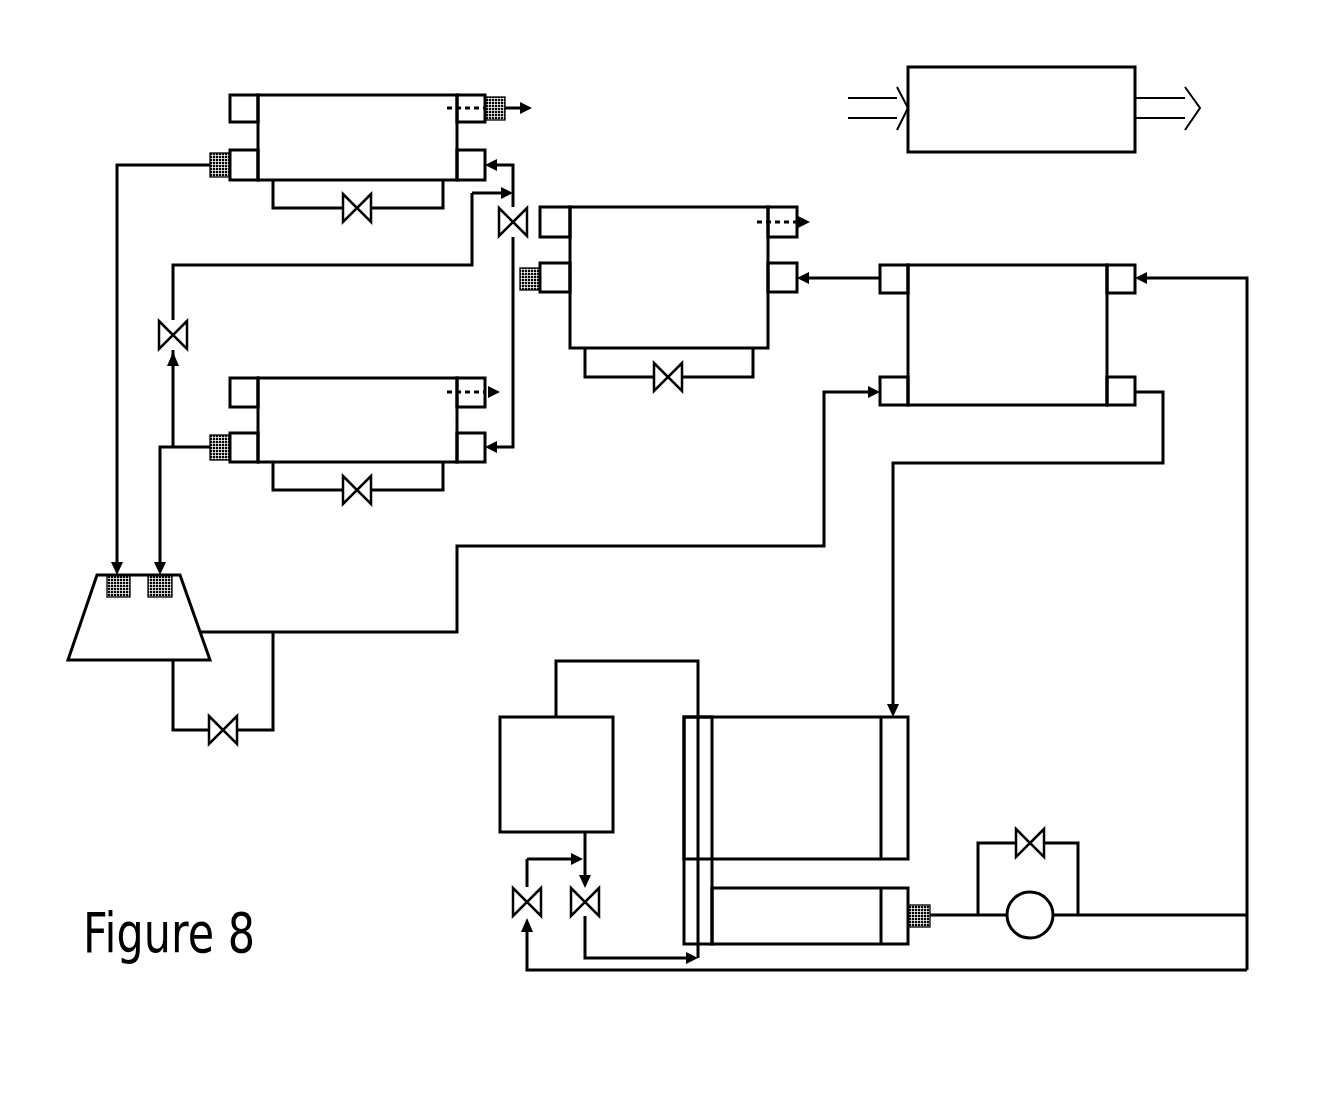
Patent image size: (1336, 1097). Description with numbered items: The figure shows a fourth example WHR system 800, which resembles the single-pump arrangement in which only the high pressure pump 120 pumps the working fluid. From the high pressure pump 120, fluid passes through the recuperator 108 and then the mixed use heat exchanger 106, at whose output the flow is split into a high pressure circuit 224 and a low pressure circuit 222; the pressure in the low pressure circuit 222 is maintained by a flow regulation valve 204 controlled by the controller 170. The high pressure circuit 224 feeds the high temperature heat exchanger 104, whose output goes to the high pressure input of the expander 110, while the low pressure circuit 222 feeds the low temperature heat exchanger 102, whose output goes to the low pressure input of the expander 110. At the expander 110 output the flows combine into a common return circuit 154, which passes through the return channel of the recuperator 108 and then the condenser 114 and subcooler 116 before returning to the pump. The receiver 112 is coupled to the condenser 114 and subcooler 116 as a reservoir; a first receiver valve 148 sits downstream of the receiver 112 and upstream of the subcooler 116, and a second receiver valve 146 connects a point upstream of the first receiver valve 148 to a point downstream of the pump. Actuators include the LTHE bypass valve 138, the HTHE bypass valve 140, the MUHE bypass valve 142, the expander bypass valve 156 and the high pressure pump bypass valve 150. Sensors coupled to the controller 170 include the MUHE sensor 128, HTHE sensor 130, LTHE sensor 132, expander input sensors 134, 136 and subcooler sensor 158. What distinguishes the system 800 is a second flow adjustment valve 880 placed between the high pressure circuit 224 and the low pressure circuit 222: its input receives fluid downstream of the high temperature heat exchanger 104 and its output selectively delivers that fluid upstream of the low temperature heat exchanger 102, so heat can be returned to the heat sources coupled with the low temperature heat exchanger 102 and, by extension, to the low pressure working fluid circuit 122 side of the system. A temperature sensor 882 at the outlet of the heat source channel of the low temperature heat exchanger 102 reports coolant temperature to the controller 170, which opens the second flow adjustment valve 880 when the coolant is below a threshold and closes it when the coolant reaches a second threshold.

The low temperature heat exchanger 102 is at (357, 137).
The high temperature heat exchanger 104 is at (365, 420).
The mixed use heat exchanger 106 is at (675, 277).
The recuperator 108 is at (980, 491).
The expander 110 is at (139, 617).
The receiver 112 is at (599, 809).
The condenser 114 is at (796, 830).
The subcooler 116 is at (810, 916).
The high pressure pump 120 is at (1042, 933).
The low pressure working fluid circuit 122 is at (1250, 505).
The MUHE sensor 128 is at (530, 292).
The HTHE sensor 130 is at (214, 435).
The LTHE sensor 132 is at (214, 153).
The expander input sensor 134 is at (172, 580).
The expander input sensor 136 is at (107, 577).
The LTHE bypass valve 138 is at (342, 232).
The HTHE bypass valve 140 is at (347, 515).
The MUHE bypass valve 142 is at (662, 410).
The second receiver valve 146 is at (505, 903).
The first receiver valve 148 is at (607, 903).
The high pressure pump bypass valve 150 is at (1020, 815).
The common return circuit 154 is at (545, 556).
The expander bypass valve 156 is at (216, 760).
The subcooler sensor 158 is at (918, 904).
The controller 170 is at (1027, 109).
The flow regulation valve 204 is at (488, 238).
The low pressure circuit 222 is at (513, 186).
The high pressure circuit 224 is at (516, 420).
The fourth example WHR system 800 is at (1235, 206).
The second flow adjustment valve 880 is at (208, 333).
The temperature sensor 882 is at (507, 100).